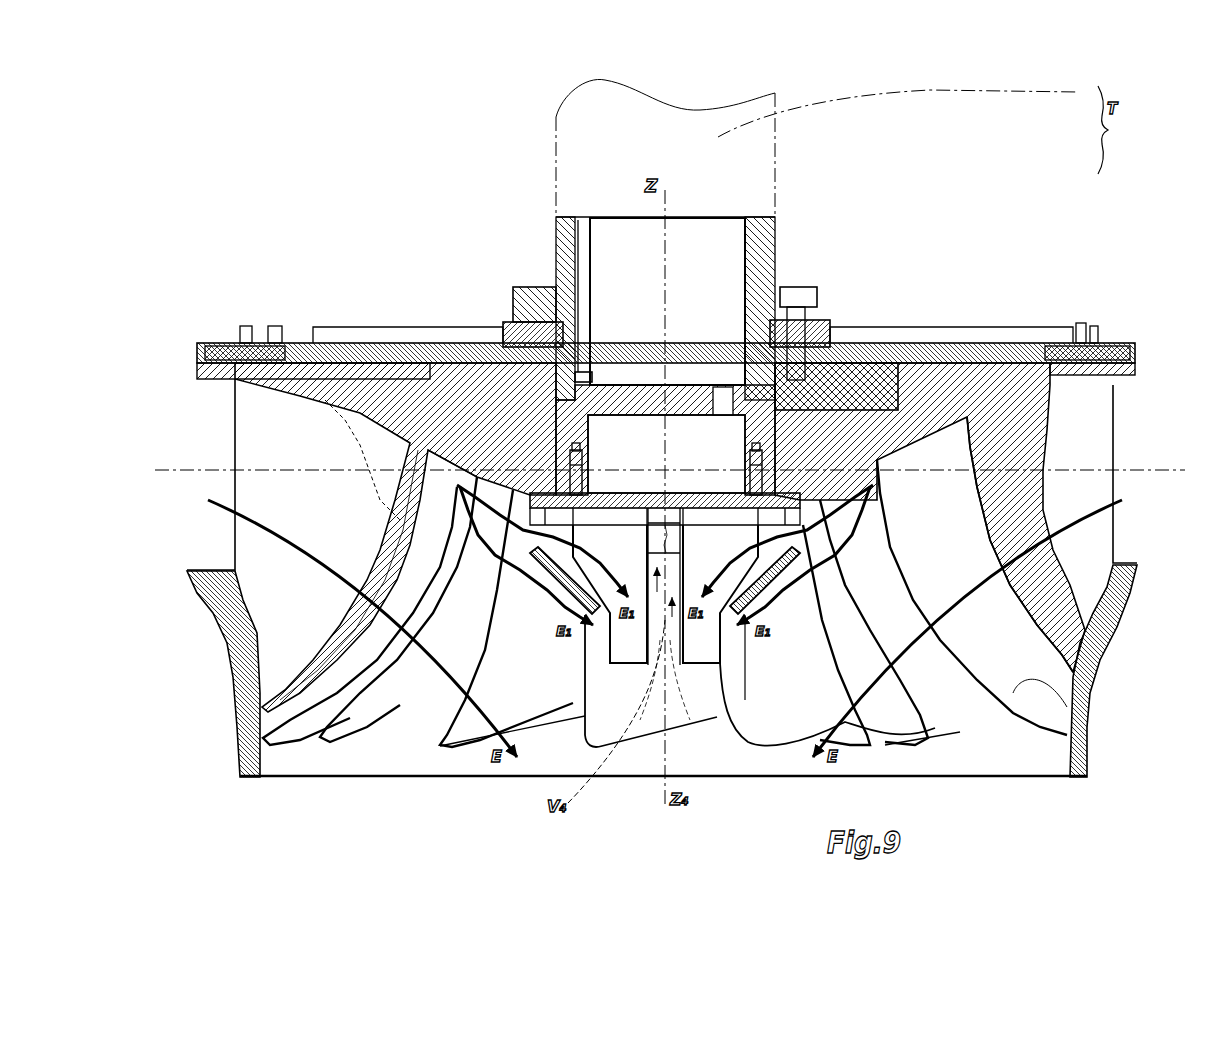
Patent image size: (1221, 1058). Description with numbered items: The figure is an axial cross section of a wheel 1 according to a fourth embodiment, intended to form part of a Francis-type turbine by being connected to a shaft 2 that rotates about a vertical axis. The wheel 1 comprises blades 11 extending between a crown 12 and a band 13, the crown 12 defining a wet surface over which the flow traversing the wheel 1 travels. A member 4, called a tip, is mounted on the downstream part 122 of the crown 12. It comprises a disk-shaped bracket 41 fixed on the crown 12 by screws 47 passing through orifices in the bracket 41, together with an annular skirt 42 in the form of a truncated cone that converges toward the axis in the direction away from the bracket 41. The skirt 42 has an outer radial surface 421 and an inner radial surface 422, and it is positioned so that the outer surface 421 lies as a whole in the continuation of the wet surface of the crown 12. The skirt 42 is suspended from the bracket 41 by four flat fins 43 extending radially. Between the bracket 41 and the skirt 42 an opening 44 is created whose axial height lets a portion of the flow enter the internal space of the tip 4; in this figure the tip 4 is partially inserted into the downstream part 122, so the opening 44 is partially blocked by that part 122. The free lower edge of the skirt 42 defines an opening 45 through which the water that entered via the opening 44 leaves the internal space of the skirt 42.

The wheel 1 is at (922, 313).
The shaft 2 is at (823, 148).
The member (tip) 4 is at (522, 452).
The blades 11 is at (1077, 672).
The crown 12 is at (946, 393).
The band 13 is at (1097, 680).
The disk-shaped bracket 41 is at (717, 493).
The annular skirt 42 is at (556, 590).
The flat fins 43 is at (665, 586).
The opening 44 is at (537, 541).
The opening 45 is at (672, 640).
The screws 47 is at (588, 483).
The downstream part of the crown 122 is at (815, 487).
The outer radial surface of the skirt 421 is at (768, 597).
The inner radial surface of the skirt 422 is at (606, 642).